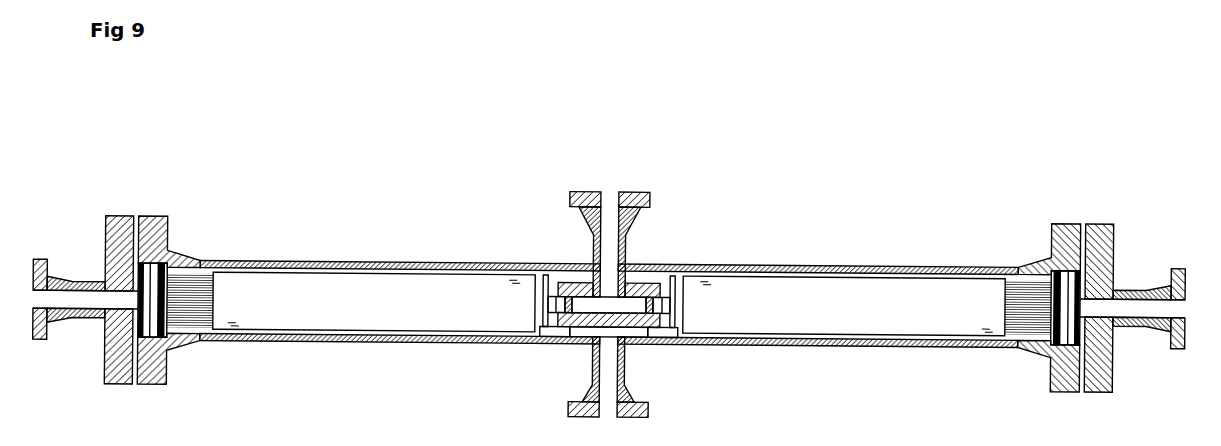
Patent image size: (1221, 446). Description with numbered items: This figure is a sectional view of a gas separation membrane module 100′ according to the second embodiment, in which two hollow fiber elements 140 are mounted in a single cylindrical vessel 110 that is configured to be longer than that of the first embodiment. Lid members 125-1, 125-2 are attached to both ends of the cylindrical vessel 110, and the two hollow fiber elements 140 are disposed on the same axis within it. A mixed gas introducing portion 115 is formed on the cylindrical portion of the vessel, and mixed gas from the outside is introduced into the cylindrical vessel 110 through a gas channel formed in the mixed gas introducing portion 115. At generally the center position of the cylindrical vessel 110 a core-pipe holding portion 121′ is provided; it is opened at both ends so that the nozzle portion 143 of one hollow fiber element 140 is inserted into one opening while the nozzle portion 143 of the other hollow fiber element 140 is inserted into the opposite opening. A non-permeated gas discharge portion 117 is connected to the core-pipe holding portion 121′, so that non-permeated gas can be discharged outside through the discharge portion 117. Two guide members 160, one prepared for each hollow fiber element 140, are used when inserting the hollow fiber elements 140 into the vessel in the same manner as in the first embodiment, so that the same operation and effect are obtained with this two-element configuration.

The gas separation membrane module 100′ is at (98, 128).
The cylindrical vessel 110 is at (935, 243).
The mixed gas introducing portion 115 is at (625, 367).
The non-permeated gas discharge portion 117 is at (622, 243).
The core-pipe holding portion 121′ is at (580, 282).
The lid member 125-1 is at (115, 248).
The lid member 125-2 is at (1110, 249).
The hollow fiber element 140 is at (392, 305).
The nozzle portion 143 is at (555, 297).
The guide member 160 is at (552, 333).